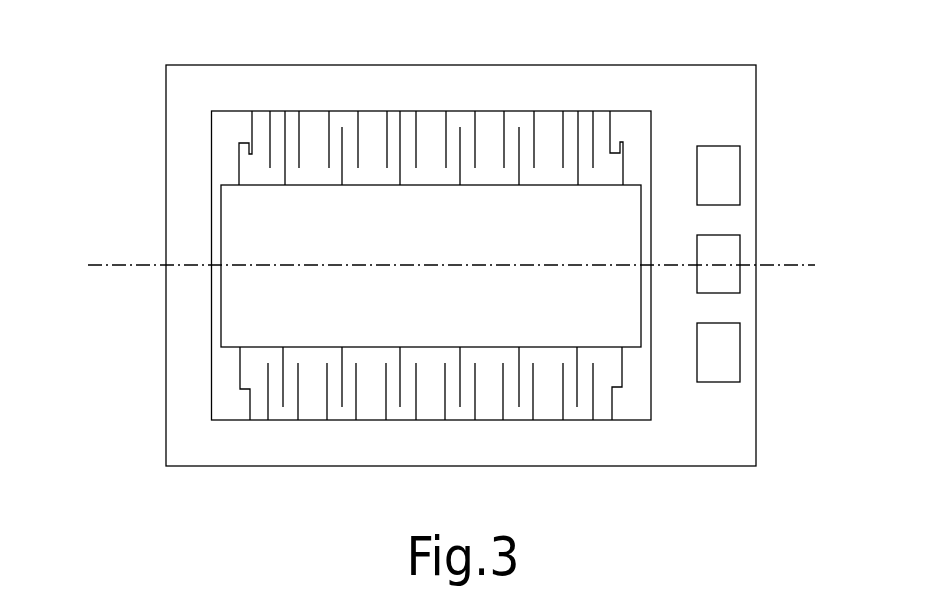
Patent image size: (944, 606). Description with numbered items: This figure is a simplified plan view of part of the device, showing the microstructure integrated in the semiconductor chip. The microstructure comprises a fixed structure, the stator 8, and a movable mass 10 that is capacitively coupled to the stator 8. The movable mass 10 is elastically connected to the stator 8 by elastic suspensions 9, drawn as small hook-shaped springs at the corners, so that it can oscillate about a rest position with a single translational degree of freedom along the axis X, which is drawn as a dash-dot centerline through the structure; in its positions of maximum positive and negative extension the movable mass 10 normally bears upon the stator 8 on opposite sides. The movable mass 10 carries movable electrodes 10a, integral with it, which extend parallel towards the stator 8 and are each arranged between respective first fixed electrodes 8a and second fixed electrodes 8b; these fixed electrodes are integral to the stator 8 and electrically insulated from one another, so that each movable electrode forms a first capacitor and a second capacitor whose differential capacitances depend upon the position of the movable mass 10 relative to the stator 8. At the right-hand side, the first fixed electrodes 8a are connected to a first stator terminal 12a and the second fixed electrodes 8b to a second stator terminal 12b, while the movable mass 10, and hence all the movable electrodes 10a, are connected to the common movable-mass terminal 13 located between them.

The stator 8 is at (183, 160).
The first fixed electrodes 8a is at (272, 132).
The second fixed electrodes 8b is at (302, 130).
The elastic suspensions 9 is at (238, 158).
The movable mass 10 is at (258, 313).
The movable electrodes 10a is at (285, 133).
The first stator terminal 12a is at (732, 177).
The second stator terminal 12b is at (732, 353).
The movable-mass terminal 13 is at (728, 253).
The axis X is at (120, 265).